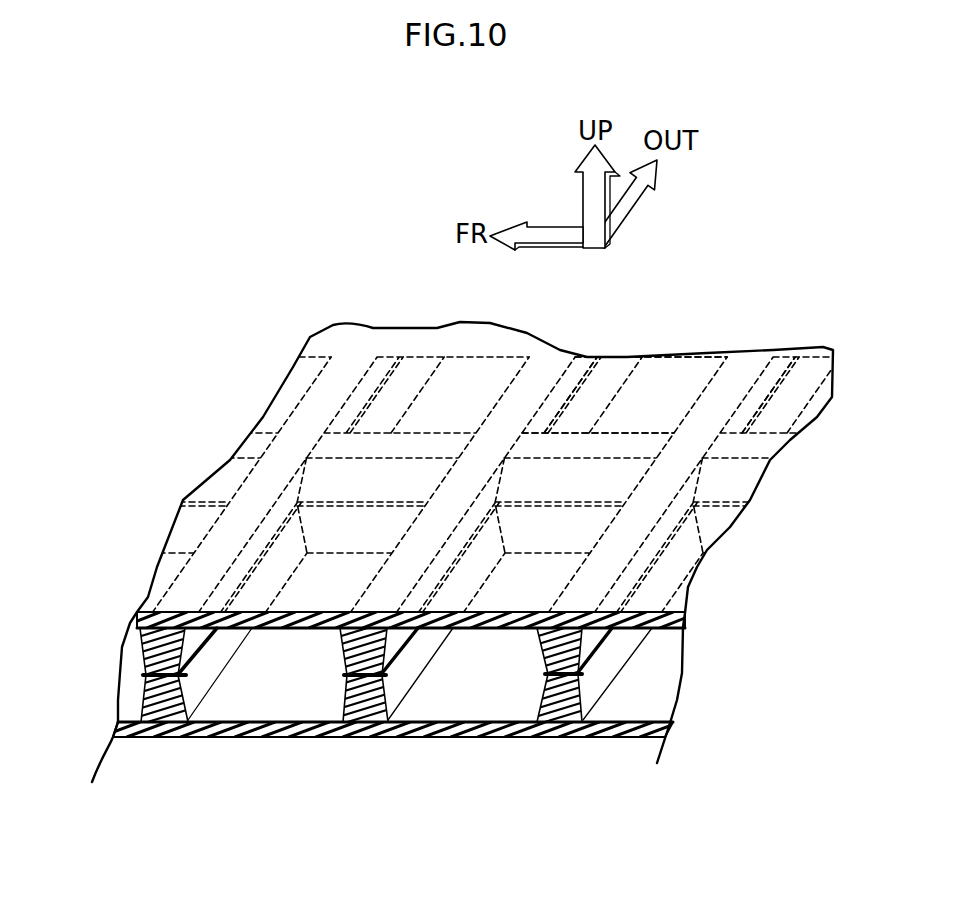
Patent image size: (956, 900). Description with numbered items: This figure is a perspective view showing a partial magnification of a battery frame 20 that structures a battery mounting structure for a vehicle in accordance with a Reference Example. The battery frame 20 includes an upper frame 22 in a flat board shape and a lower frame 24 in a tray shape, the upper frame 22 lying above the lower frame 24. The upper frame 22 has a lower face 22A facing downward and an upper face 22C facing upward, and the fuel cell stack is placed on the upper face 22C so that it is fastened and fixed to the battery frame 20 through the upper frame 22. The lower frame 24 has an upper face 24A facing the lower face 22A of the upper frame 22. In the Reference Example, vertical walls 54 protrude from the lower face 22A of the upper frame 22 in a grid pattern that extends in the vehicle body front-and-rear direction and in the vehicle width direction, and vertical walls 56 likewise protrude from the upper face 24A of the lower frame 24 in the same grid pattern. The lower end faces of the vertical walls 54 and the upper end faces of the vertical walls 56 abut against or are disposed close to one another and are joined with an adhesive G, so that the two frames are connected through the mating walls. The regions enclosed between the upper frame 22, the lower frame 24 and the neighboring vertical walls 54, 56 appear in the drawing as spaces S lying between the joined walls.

The battery frame 20 is at (486, 558).
The upper frame 22 is at (236, 457).
The lower face of the upper frame 22A is at (500, 628).
The upper face of the upper frame 22C is at (667, 380).
The lower frame 24 is at (488, 752).
The upper face of the lower frame 24A is at (317, 697).
The vertical walls 54 is at (155, 650).
The vertical walls 56 is at (402, 677).
The space S is at (260, 691).
The adhesive G is at (583, 655).